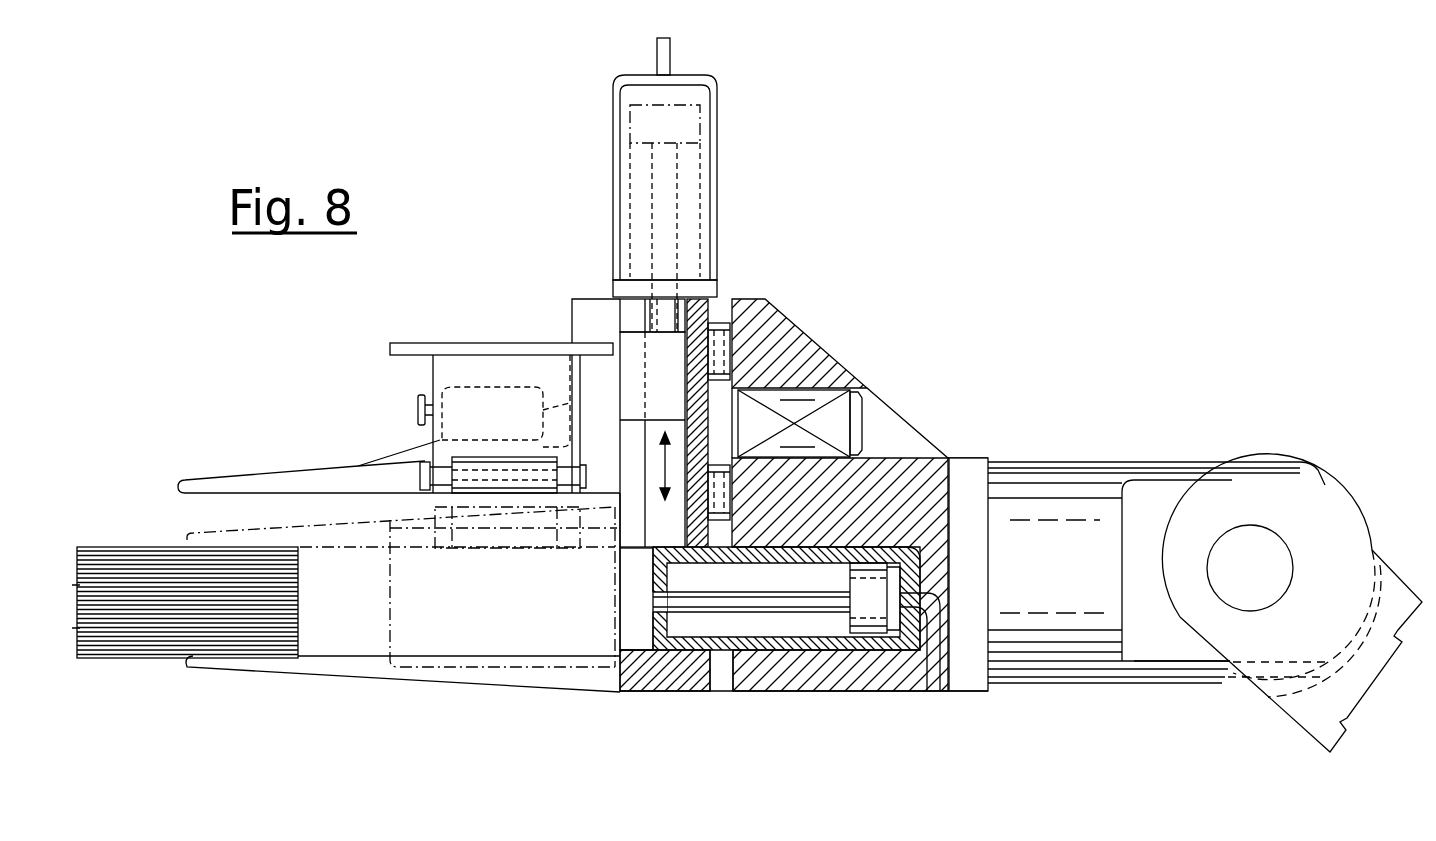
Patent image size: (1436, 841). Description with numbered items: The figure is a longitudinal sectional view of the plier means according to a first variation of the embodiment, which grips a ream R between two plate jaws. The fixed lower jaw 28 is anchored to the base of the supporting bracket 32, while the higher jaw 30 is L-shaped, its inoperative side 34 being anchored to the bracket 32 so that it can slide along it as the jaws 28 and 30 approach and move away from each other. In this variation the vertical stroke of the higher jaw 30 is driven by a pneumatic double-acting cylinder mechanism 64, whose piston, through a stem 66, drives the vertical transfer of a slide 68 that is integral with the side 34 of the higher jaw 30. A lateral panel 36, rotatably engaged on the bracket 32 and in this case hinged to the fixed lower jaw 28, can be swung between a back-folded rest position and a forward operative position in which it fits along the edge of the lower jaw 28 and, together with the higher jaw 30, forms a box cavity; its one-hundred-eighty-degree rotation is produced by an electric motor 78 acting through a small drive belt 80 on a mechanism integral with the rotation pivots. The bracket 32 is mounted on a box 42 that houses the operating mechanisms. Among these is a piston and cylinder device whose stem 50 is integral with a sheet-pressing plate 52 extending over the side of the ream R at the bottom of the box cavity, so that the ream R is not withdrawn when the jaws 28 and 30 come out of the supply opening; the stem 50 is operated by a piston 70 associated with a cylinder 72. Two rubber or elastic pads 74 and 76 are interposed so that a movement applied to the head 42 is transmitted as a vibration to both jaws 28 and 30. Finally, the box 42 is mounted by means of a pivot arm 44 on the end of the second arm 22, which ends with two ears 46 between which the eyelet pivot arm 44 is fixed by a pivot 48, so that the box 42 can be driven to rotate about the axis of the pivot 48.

The second arm 22 is at (1310, 703).
The fixed lower jaw 28 is at (313, 668).
The higher jaw 30 is at (322, 484).
The supporting bracket 32 is at (613, 500).
The inoperative side 34 is at (583, 328).
The lateral panel 36 is at (462, 343).
The box 42 is at (812, 370).
The pivot arm 44 is at (1067, 642).
The ears 46 is at (1200, 605).
The pivot 48 is at (1240, 543).
The stem 50 is at (805, 607).
The sheet-pressing plate 52 is at (642, 637).
The pneumatic double-acting cylinder mechanism 64 is at (718, 197).
The stem 66 is at (689, 308).
The slide 68 is at (637, 352).
The piston 70 is at (873, 622).
The cylinder 72 is at (757, 652).
The rubber pad 74 is at (720, 340).
The rubber pad 76 is at (722, 488).
The electric motor 78 is at (418, 408).
The drive belt 80 is at (422, 438).
The ream R is at (175, 622).